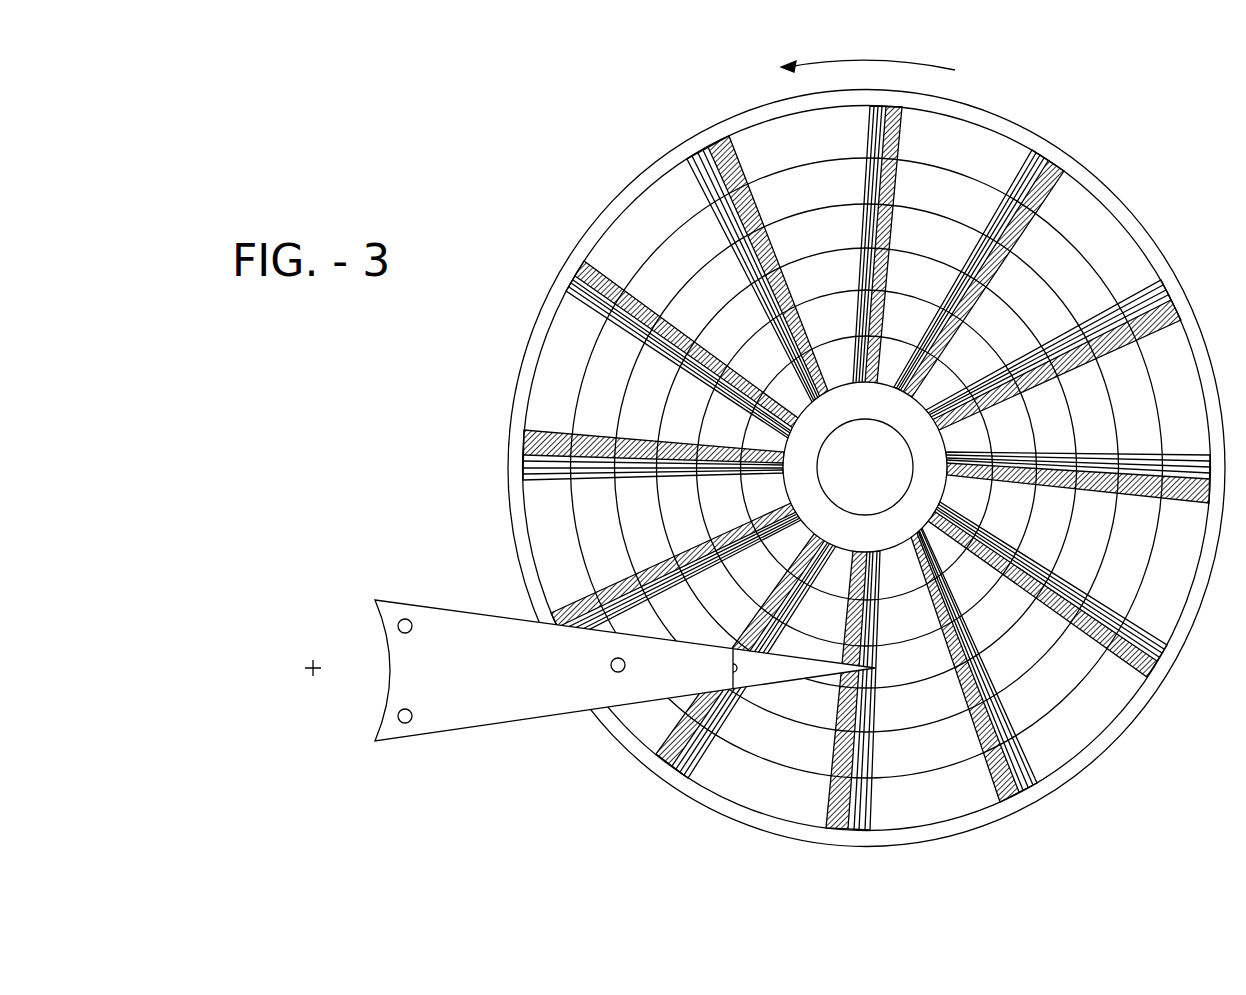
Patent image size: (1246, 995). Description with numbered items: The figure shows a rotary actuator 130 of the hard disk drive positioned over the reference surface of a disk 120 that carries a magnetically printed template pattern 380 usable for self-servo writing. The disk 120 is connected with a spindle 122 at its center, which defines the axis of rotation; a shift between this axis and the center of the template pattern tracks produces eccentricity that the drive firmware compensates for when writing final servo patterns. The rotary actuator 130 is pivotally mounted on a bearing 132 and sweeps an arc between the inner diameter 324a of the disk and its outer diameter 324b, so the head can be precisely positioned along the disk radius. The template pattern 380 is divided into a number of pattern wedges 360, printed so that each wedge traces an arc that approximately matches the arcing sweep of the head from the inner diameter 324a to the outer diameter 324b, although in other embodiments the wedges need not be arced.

The disk 120 is at (1098, 178).
The spindle 122 is at (893, 431).
The rotary actuator 130 is at (444, 740).
The bearing 132 is at (315, 642).
The inner diameter 324a is at (871, 542).
The outer diameter 324b is at (814, 815).
The pattern wedges 360 is at (863, 418).
The template pattern 380 is at (746, 154).